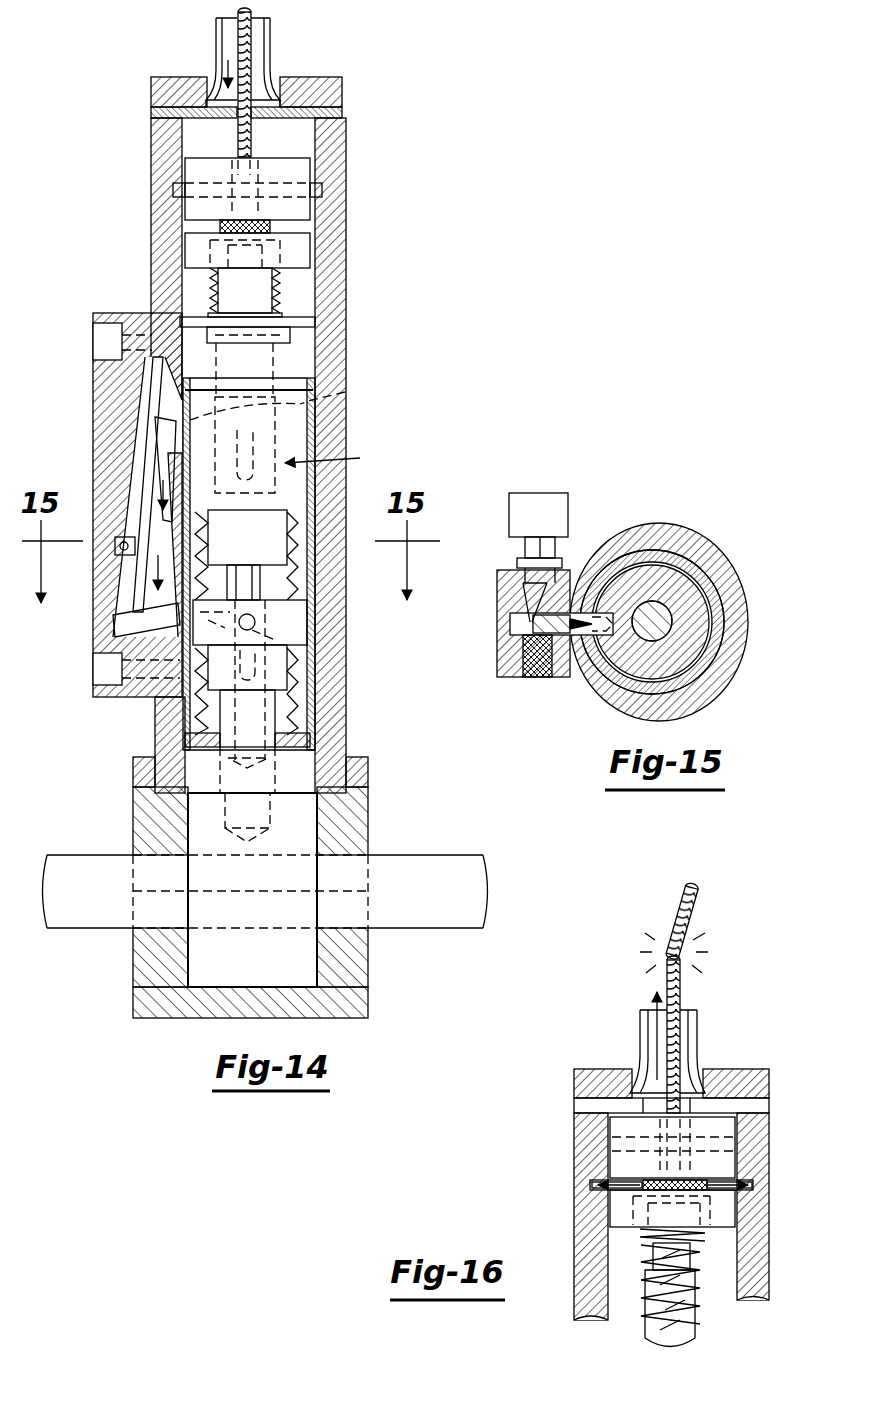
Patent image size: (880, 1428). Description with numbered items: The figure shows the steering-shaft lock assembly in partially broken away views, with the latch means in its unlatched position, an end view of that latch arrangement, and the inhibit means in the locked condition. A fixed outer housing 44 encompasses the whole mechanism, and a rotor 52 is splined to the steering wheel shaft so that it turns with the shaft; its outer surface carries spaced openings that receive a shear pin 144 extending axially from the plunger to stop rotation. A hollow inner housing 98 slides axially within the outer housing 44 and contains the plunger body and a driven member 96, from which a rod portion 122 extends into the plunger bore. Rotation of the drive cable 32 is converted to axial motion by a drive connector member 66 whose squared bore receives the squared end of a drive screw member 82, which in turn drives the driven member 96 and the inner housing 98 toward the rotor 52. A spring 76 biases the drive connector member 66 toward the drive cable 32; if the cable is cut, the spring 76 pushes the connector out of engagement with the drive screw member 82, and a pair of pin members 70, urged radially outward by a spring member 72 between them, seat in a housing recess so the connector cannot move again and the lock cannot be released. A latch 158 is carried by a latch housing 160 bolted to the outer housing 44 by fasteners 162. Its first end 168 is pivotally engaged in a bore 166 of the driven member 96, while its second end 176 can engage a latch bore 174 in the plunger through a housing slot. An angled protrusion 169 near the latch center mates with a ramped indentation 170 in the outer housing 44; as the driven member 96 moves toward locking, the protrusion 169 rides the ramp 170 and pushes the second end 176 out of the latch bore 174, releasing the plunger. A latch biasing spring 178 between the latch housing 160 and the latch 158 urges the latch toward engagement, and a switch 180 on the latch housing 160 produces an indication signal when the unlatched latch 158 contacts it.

In FIG. 14, the drive cable 32 is at (250, 60).
In FIG. 16, the drive cable 32 is at (681, 975).
In FIG. 15, the outer housing 44 is at (688, 545).
In FIG. 16, the outer housing 44 is at (760, 1142).
In FIG. 14, the rotor 52 is at (300, 835).
In FIG. 14, the drive connector member 66 is at (290, 175).
In FIG. 16, the drive connector member 66 is at (722, 1162).
In FIG. 16, the pin members 70 is at (592, 1184).
In FIG. 16, the spring member 72 is at (714, 1190).
In FIG. 14, the spring 76 is at (283, 282).
In FIG. 16, the spring 76 is at (700, 1245).
In FIG. 14, the drive screw member 82 is at (247, 300).
In FIG. 16, the drive screw member 82 is at (700, 1312).
In FIG. 14, the driven member 96 is at (341, 457).
In FIG. 14, the inner housing 98 is at (312, 630).
In FIG. 15, the inner housing 98 is at (712, 598).
In FIG. 14, the rod portion 122 is at (260, 577).
In FIG. 15, the rod portion 122 is at (656, 622).
In FIG. 14, the shear pin 144 is at (255, 810).
In FIG. 14, the latch 158 is at (145, 500).
In FIG. 15, the latch 158 is at (553, 677).
In FIG. 14, the latch housing 160 is at (135, 462).
In FIG. 15, the latch housing 160 is at (508, 655).
In FIG. 14, the fasteners 162 is at (108, 340).
In FIG. 14, the bore 166 is at (293, 399).
In FIG. 14, the first end 168 is at (290, 425).
In FIG. 14, the angled protrusion 169 is at (140, 560).
In FIG. 14, the ramped indentation 170 is at (195, 505).
In FIG. 14, the latch bore 174 is at (305, 655).
In FIG. 14, the second end 176 is at (125, 610).
In FIG. 14, the latch biasing spring 178 is at (140, 440).
In FIG. 15, the latch biasing spring 178 is at (527, 595).
In FIG. 14, the switch 180 is at (118, 548).